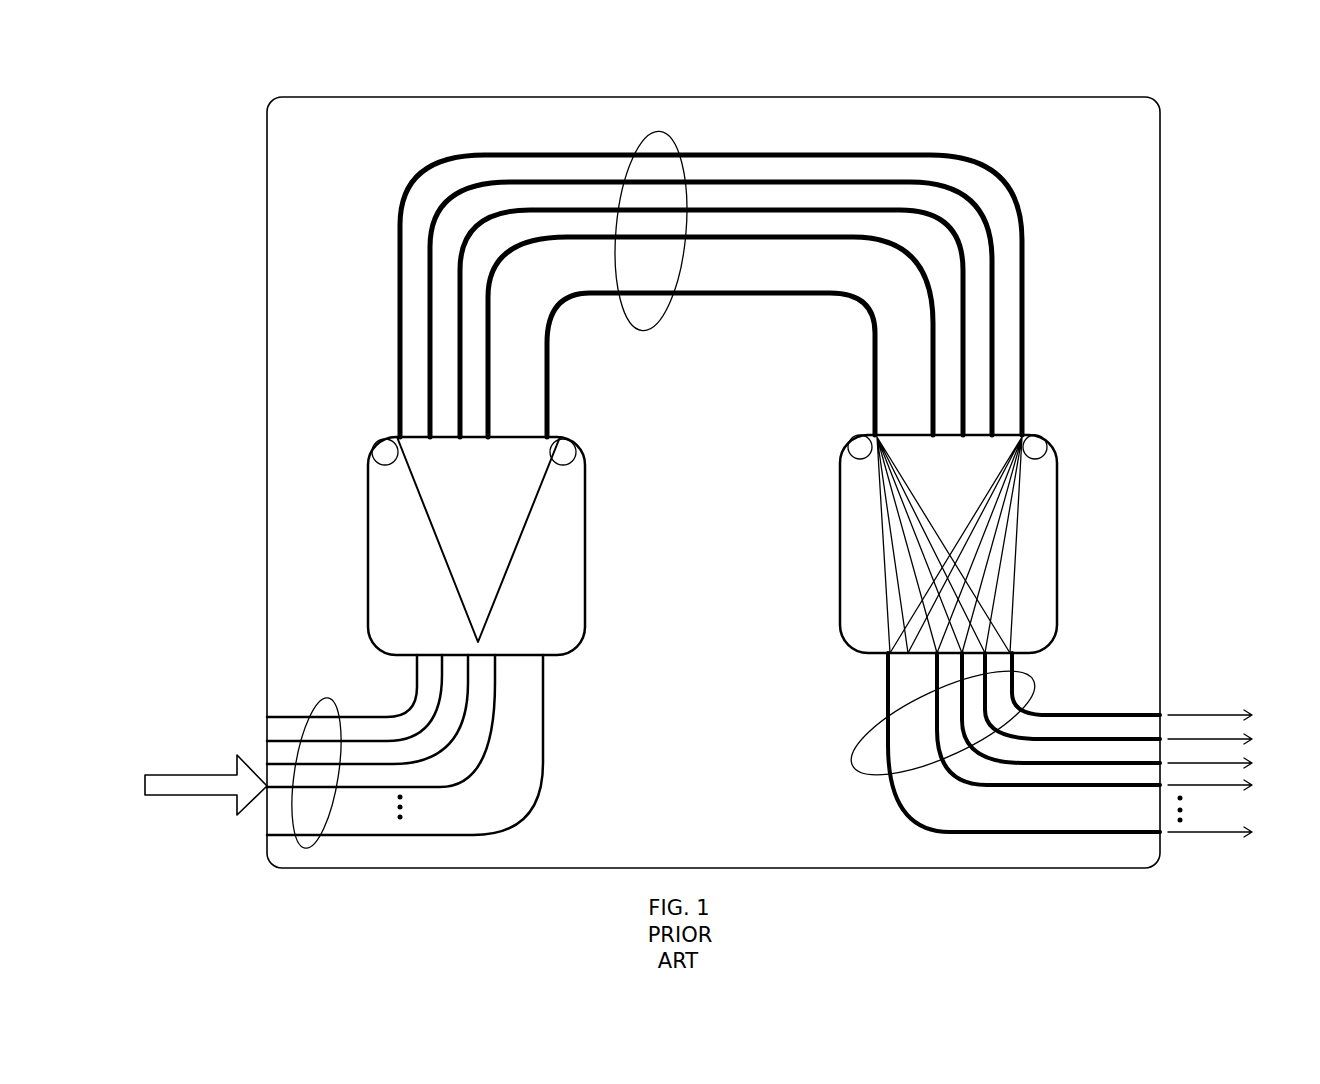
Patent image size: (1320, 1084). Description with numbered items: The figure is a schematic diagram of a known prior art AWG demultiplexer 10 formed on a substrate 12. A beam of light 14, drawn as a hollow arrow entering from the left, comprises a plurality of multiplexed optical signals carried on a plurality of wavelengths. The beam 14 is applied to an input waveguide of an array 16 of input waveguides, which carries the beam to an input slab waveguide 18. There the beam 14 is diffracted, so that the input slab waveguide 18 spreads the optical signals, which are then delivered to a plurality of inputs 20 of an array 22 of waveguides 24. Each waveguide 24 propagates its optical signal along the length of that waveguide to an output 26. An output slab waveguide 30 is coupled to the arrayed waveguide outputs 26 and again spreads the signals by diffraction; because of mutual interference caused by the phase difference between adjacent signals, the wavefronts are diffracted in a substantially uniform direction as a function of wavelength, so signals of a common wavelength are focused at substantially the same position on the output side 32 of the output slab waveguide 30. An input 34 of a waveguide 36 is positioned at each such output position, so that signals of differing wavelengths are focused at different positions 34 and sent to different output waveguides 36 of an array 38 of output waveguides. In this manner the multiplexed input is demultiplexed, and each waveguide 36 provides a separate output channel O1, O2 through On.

The AWG demultiplexer 10 is at (253, 168).
The substrate 12 is at (747, 97).
The beam of light 14 is at (200, 797).
The array of input waveguides 16 is at (305, 848).
The input slab waveguide 18 is at (586, 545).
The inputs 20 is at (374, 455).
The array of waveguides 22 is at (660, 132).
The waveguide 24 is at (820, 152).
The output 26 is at (848, 448).
The output slab waveguide 30 is at (1058, 437).
The output side 32 is at (863, 653).
The input of waveguide 34 is at (890, 655).
The output waveguide 36 is at (1127, 710).
The array of output waveguides 38 is at (850, 770).
The output channel O1 is at (1070, 713).
The output channel O2 is at (1067, 737).
The output channel On is at (1040, 832).